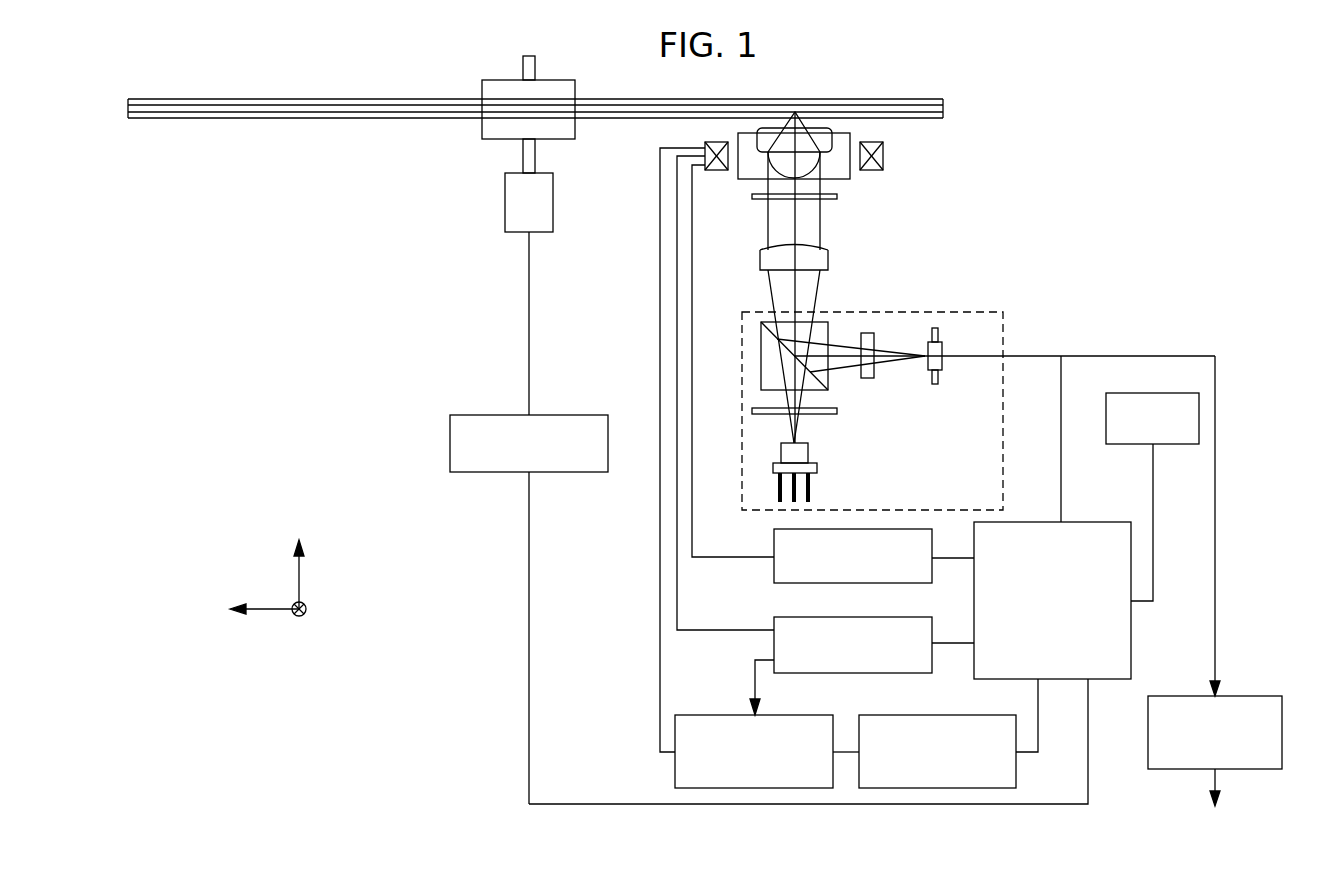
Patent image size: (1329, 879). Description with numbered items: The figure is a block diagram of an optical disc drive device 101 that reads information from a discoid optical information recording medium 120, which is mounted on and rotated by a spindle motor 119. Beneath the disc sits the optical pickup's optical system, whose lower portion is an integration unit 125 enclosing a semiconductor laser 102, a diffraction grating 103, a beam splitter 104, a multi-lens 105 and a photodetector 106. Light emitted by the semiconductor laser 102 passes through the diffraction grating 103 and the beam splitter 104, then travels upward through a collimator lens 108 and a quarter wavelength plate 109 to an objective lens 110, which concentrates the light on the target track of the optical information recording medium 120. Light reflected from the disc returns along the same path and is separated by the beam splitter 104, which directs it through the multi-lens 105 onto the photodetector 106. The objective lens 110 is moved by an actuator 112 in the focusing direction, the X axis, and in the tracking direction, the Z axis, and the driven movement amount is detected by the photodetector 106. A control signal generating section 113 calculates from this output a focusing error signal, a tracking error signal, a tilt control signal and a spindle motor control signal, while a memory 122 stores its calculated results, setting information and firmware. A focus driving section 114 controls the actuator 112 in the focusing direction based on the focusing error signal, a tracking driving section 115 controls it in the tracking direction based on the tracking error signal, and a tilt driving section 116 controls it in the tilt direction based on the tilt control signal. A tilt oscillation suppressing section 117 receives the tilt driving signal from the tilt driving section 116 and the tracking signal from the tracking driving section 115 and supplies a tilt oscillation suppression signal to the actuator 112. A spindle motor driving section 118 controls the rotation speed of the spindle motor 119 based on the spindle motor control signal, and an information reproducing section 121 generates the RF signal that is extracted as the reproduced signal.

The optical disc drive device 101 is at (1081, 98).
The semiconductor laser 102 is at (809, 453).
The diffraction grating 103 is at (838, 411).
The beam splitter 104 is at (821, 319).
The multi-lens 105 is at (876, 342).
The photodetector 106 is at (943, 349).
The collimator lens 108 is at (829, 258).
The quarter wavelength plate 109 is at (838, 196).
The objective lens 110 is at (850, 137).
The actuator 112 is at (884, 162).
The control signal generating section 113 is at (1075, 522).
The focus driving section 114 is at (773, 572).
The tracking driving section 115 is at (883, 617).
The tilt driving section 116 is at (960, 715).
The tilt oscillation suppressing section 117 is at (778, 715).
The spindle motor driving section 118 is at (558, 415).
The spindle motor 119 is at (505, 208).
The optical information recording medium 120 is at (845, 99).
The information reproducing section 121 is at (1240, 696).
The memory 122 is at (1140, 393).
The integration unit 125 is at (1003, 330).